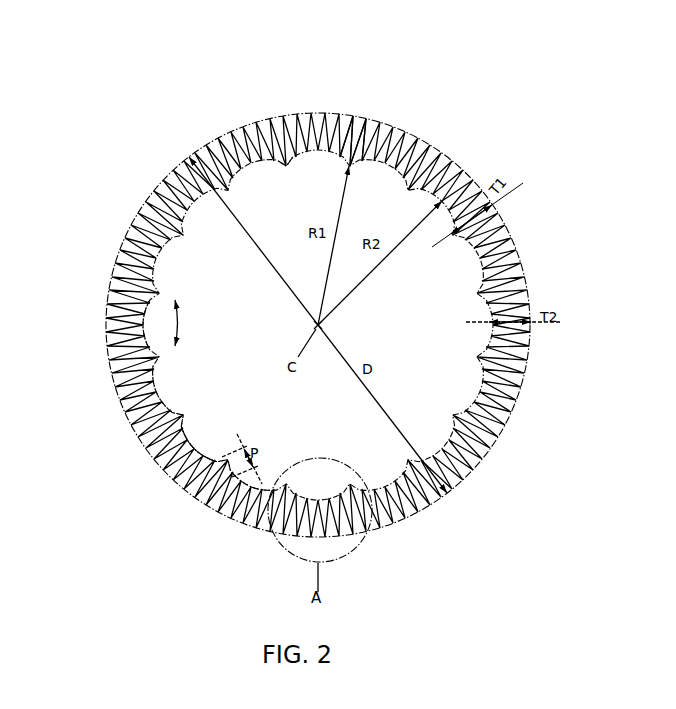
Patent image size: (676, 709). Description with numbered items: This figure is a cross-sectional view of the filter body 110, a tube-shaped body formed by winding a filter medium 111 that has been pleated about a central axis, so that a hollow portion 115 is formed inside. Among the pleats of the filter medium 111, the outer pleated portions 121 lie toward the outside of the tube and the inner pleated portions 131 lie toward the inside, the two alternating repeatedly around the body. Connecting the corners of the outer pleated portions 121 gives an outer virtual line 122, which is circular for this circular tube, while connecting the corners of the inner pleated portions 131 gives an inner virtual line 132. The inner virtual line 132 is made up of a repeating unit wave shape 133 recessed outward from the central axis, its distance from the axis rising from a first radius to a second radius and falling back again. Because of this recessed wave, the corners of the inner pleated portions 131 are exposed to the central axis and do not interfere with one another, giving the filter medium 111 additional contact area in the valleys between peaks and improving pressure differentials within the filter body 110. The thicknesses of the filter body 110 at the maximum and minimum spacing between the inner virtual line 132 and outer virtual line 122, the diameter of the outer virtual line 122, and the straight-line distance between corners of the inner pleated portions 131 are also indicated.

The filter body 110 is at (148, 31).
The filter medium 111 is at (309, 113).
The hollow portion 115 is at (282, 200).
The outer pleated portions 121 is at (351, 113).
The outer virtual line 122 is at (387, 118).
The inner pleated portions 131 is at (204, 483).
The inner virtual line 132 is at (192, 452).
The unit wave shape 133 is at (160, 320).